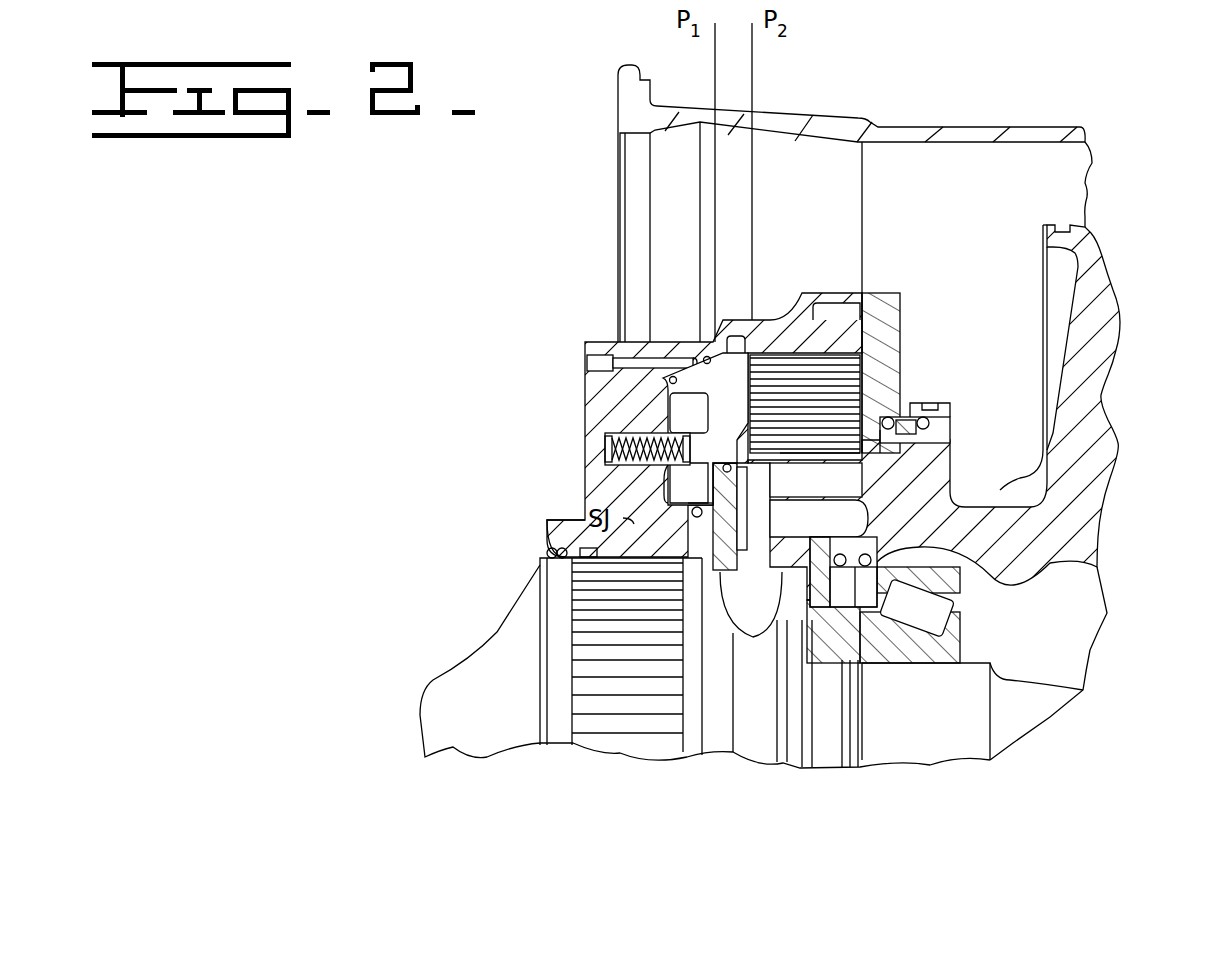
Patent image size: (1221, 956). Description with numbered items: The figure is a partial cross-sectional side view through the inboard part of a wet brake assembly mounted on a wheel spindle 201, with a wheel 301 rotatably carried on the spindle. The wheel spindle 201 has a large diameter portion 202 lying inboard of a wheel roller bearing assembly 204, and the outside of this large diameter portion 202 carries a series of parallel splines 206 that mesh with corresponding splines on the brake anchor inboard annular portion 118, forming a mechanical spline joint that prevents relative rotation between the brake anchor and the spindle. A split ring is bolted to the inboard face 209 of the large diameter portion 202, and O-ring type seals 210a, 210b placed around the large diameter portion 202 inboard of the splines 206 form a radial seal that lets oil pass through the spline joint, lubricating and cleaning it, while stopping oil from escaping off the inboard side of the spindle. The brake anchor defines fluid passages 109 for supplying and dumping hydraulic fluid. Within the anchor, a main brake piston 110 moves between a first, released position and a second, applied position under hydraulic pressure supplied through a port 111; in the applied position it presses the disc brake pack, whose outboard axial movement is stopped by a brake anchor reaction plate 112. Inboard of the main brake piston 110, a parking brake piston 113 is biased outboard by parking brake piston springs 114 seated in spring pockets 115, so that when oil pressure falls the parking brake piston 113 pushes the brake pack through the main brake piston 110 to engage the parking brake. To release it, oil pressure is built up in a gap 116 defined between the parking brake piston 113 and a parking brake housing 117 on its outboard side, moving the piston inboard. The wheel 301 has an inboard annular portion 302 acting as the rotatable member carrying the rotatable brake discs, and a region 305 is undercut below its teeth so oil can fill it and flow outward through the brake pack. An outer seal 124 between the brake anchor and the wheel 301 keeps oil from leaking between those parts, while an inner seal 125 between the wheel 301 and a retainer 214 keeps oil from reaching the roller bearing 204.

The fluid passages 109 is at (752, 340).
The main brake piston 110 is at (600, 380).
The port 111 is at (628, 363).
The brake anchor reaction plate 112 is at (895, 375).
The parking brake piston 113 is at (668, 400).
The parking brake piston springs 114 is at (607, 447).
The spring pockets 115 is at (640, 470).
The gap 116 is at (715, 560).
The parking brake housing 117 is at (722, 575).
The brake anchor inboard annular portion 118 is at (565, 528).
The outer seal 124 is at (933, 437).
The inner seal 125 is at (965, 580).
The wheel spindle 201 is at (480, 632).
The large diameter portion 202 is at (560, 663).
The wheel roller bearing assembly 204 is at (955, 613).
The parallel splines 206 is at (660, 687).
The inboard face 209 is at (540, 570).
The seal 210a is at (548, 555).
The seal 210b is at (545, 537).
The retainer 214 is at (820, 643).
The wheel 301 is at (1063, 497).
The wheel inboard annular portion 302 is at (860, 473).
The region 305 is at (822, 531).